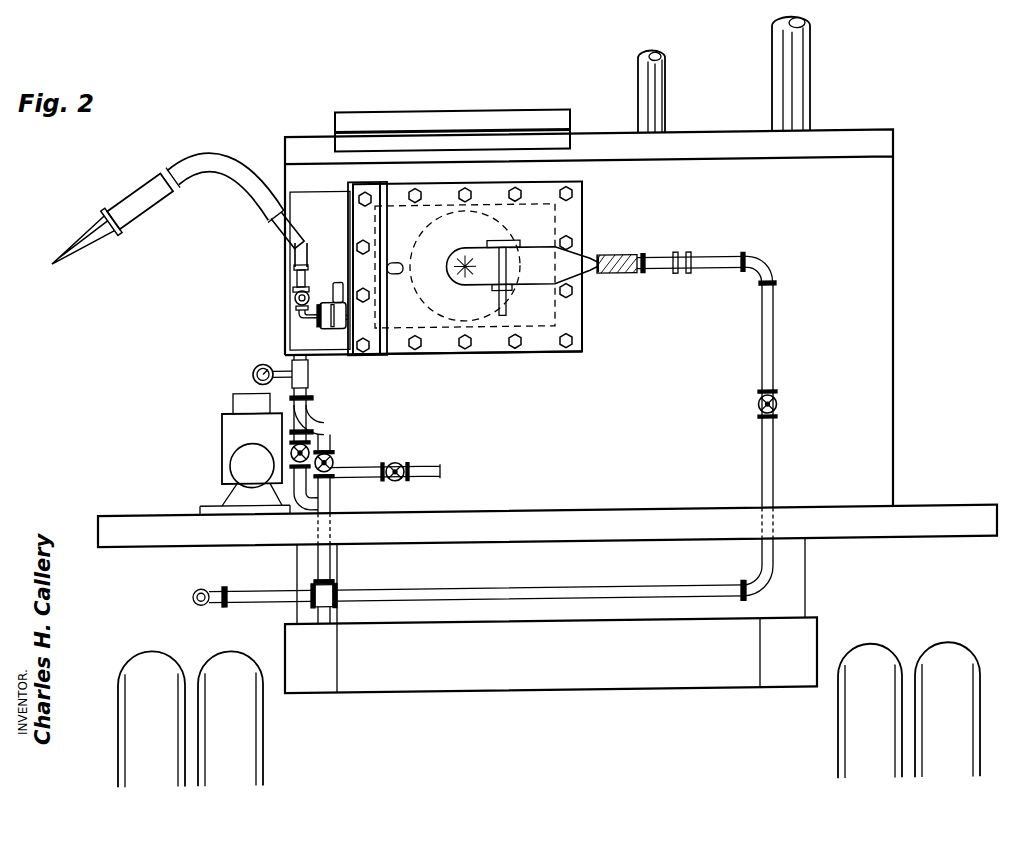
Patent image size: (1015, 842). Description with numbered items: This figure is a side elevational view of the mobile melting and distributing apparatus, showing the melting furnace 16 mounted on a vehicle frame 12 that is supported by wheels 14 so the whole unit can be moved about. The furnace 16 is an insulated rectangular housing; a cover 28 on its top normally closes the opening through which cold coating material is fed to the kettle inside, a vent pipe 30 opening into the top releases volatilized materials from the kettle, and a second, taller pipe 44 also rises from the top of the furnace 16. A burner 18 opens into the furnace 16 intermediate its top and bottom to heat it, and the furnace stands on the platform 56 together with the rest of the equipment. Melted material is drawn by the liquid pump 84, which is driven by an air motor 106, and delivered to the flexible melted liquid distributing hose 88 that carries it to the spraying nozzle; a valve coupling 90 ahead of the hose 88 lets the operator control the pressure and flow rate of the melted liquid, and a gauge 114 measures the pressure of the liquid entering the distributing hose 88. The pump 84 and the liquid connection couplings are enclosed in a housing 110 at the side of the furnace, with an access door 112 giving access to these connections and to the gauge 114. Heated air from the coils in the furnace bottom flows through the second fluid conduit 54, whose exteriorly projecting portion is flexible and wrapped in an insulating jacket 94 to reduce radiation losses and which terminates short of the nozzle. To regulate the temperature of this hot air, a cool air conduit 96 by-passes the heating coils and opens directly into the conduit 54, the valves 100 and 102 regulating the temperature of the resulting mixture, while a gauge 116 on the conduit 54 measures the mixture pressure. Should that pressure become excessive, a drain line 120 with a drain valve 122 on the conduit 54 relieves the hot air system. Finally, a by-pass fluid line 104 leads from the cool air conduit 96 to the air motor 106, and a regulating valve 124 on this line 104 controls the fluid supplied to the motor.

The vehicle frame 12 is at (668, 680).
The wheels 14 is at (163, 660).
The melting furnace 16 is at (898, 171).
The burner 18 is at (233, 398).
The cover 28 is at (556, 112).
The vent pipe 30 is at (660, 120).
The exhaust pipe 44 is at (805, 116).
The second fluid conduit 54 is at (277, 221).
The platform 56 is at (958, 510).
The liquid pump 84 is at (486, 212).
The melted liquid distributing hose 88 is at (122, 229).
The valve coupling 90 is at (306, 291).
The insulating jacket 94 is at (250, 149).
The cool air conduit 96 is at (254, 590).
The valve 100 is at (290, 442).
The valve 102 is at (336, 455).
The by-pass fluid line 104 is at (596, 570).
The air motor 106 is at (540, 250).
The housing 110 is at (565, 356).
The access door 112 is at (364, 361).
The gauge 114 is at (312, 268).
The gauge 116 is at (266, 364).
The drain line 120 is at (358, 470).
The drain valve 122 is at (405, 468).
The regulating valve 124 is at (776, 410).